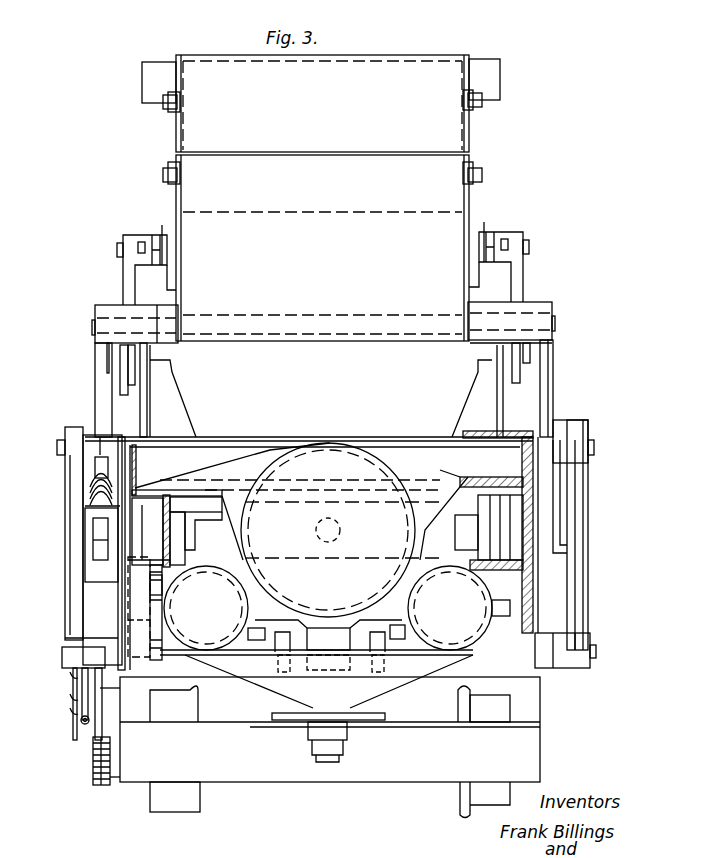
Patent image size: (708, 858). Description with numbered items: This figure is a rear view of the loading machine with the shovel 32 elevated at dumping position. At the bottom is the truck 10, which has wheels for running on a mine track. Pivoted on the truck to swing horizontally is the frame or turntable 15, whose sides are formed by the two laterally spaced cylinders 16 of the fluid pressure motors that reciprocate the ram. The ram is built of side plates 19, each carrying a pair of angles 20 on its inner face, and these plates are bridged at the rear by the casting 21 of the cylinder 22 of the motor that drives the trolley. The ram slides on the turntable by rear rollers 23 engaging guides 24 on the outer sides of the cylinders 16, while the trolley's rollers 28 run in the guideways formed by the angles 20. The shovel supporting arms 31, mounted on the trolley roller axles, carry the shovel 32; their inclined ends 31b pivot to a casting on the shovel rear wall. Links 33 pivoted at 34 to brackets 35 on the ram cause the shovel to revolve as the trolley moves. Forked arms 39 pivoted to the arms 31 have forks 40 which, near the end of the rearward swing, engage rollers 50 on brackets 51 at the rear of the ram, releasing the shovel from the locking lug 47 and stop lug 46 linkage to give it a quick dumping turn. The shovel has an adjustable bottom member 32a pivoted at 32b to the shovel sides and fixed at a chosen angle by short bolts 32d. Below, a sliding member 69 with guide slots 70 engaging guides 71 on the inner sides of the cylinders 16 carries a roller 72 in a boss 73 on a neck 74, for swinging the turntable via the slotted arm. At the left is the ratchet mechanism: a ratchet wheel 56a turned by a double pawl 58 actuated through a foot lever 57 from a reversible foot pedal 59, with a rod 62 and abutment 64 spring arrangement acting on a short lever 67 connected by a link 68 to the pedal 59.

The truck 10 is at (330, 747).
The frame or turntable 15 is at (258, 690).
The cylinders 16 is at (328, 608).
The side plates 19 is at (556, 555).
The angles 20 is at (150, 492).
The casting 21 is at (242, 460).
The cylinder 22 is at (340, 530).
The rear rollers 23 is at (162, 584).
The guides 24 is at (510, 606).
The rollers 28 is at (155, 530).
The shovel supporting arms 31 is at (95, 386).
The inclined ends of shovel supporting arms 31b is at (95, 318).
The shovel 32 is at (322, 248).
The bottom member 32a is at (322, 103).
The pivot 32b is at (163, 105).
The short bolts 32d is at (163, 176).
The links 33 is at (580, 580).
The pivot 34 is at (596, 650).
The brackets 35 is at (553, 660).
The forked arms 39 is at (123, 276).
The forks 40 is at (520, 375).
The stop lug 46 is at (172, 280).
The locking lug 47 is at (500, 78).
The rollers 50 is at (528, 350).
The brackets 51 is at (470, 393).
The ratchet wheel 56a is at (98, 785).
The foot lever 57 is at (80, 692).
The double pawl 58 is at (82, 761).
The reversible foot pedal 59 is at (62, 657).
The rod 62 is at (82, 722).
The abutment 64 is at (95, 740).
The short lever 67 is at (78, 712).
The link 68 is at (72, 680).
The sliding member 69 is at (262, 626).
The guide slots 70 is at (398, 624).
The guides 71 is at (273, 648).
The roller 72 is at (328, 720).
The boss or bearing 73 is at (328, 649).
The neck 74 is at (320, 628).